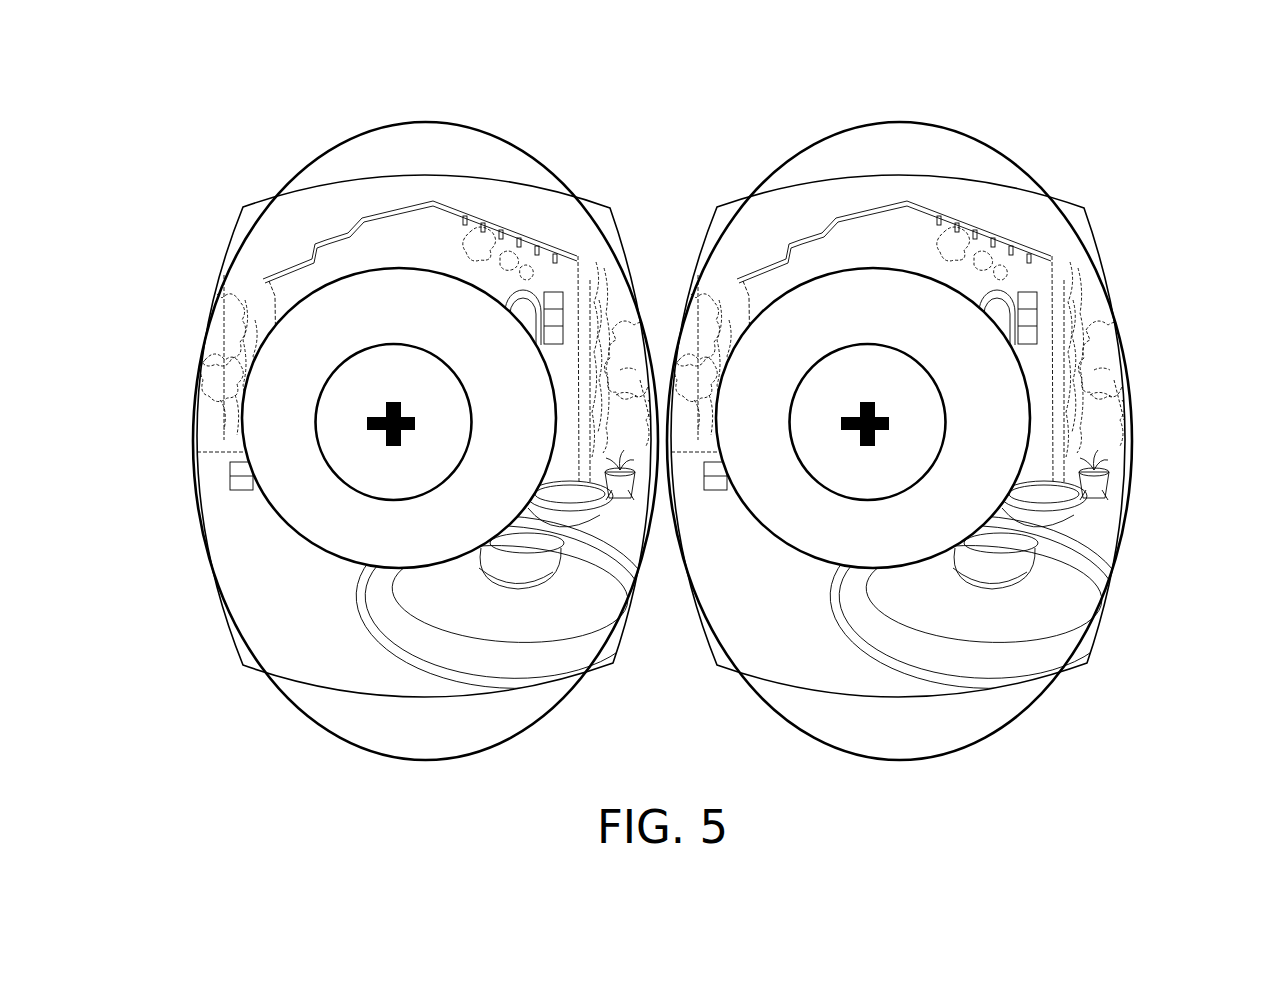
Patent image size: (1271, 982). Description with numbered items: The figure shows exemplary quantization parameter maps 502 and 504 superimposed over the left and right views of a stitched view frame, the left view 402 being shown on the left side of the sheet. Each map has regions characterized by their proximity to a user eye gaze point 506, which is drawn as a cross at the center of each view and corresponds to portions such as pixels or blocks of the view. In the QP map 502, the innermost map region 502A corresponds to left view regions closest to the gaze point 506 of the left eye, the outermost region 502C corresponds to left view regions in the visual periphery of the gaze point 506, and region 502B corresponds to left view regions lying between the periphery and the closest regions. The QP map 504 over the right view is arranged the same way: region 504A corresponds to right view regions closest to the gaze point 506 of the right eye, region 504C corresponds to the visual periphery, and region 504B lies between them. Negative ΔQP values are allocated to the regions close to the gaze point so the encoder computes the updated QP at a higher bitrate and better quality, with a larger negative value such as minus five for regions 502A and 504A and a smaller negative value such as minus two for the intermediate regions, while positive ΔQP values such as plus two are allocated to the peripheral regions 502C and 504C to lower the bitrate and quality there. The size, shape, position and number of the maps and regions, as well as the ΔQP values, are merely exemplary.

The left view 402 is at (248, 217).
The quantization parameter (QP) map 502 is at (397, 146).
The map region 502A is at (362, 365).
The map region 502B is at (297, 327).
The map region 502C is at (512, 165).
The quantization parameter (QP) map 504 is at (988, 163).
The map region 504A is at (906, 444).
The map region 504B is at (983, 370).
The map region 504C is at (892, 144).
The user eye gaze point 506 is at (367, 423).